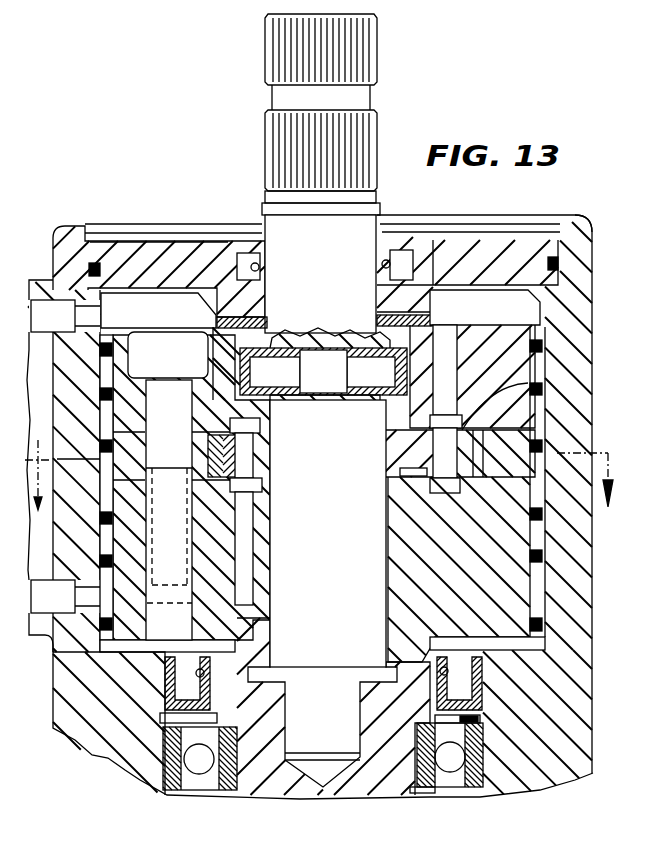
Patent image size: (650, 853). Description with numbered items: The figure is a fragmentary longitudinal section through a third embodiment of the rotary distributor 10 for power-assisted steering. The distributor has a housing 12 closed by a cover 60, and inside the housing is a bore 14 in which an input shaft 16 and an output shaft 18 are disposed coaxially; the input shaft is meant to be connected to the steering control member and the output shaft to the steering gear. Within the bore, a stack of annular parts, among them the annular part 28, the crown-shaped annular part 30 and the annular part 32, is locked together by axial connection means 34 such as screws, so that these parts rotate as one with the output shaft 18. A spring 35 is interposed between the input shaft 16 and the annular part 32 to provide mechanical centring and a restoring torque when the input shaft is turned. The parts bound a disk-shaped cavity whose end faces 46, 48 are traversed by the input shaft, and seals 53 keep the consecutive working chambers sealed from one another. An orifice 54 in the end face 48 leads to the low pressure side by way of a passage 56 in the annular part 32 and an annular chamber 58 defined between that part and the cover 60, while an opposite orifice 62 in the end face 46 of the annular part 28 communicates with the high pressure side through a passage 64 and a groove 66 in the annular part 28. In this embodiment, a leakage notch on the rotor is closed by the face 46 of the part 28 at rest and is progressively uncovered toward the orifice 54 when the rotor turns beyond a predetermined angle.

The rotary distributor 10 is at (206, 165).
The housing 12 is at (70, 235).
The cover 60 is at (165, 238).
The input shaft 16 is at (321, 173).
The spring 35 is at (296, 332).
The annular chamber 58 is at (496, 316).
The passage 56 is at (446, 377).
The annular part 32 is at (545, 318).
The seals 53 is at (550, 410).
The end face 48 is at (548, 440).
The annular part 30 is at (520, 443).
The orifice 54 is at (395, 428).
The end face 46 is at (392, 460).
The orifice 62 is at (262, 482).
The passage 64 is at (248, 540).
The groove 66 is at (540, 580).
The annular part 28 is at (530, 600).
The output shaft 18 is at (405, 700).
The axial connection means 34 is at (168, 486).
The bore 14 is at (325, 487).